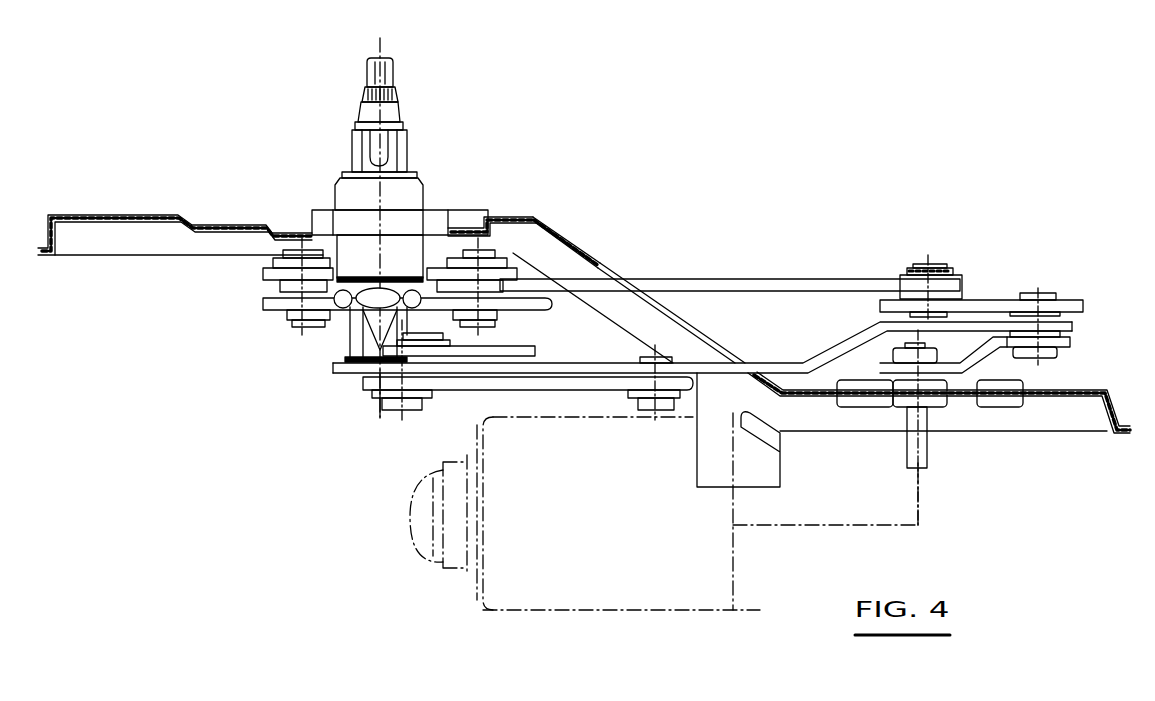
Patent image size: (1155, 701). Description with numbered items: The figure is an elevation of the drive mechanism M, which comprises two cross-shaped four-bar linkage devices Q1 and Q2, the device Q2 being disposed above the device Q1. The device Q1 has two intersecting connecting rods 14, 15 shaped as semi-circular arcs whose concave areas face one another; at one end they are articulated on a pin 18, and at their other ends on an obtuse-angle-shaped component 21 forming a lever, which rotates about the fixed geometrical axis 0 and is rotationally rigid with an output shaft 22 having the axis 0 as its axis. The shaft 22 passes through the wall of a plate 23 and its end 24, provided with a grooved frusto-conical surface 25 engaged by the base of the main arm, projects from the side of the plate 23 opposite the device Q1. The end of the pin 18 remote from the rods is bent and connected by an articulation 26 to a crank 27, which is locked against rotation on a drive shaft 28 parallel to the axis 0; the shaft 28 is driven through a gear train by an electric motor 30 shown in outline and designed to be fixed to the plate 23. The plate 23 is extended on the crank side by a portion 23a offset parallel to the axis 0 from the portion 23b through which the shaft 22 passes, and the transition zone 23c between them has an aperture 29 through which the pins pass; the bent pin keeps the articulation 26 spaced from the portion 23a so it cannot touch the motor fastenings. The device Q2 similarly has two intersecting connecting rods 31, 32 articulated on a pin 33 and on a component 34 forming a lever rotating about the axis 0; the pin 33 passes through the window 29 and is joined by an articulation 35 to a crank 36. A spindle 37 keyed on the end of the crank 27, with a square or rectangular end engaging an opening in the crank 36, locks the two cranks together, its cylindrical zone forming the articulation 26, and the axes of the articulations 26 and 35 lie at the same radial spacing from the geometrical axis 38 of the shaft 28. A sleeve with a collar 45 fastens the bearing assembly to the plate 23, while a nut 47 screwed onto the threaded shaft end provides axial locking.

The fixed geometrical axis 0 is at (378, 155).
The connecting rod 14 is at (565, 382).
The connecting rod 15 is at (516, 352).
The pin 18 is at (713, 366).
The component forming a lever 21 is at (368, 368).
The output shaft 22 is at (392, 110).
The plate 23 is at (517, 209).
The offset portion of plate 23a is at (1083, 398).
The portion of plate 23b is at (287, 220).
The transition zone 23c is at (554, 227).
The end of output shaft 24 is at (352, 78).
The grooved frusto-conical surface 25 is at (398, 93).
The articulation 26 is at (1058, 318).
The crank 27 is at (990, 358).
The drive shaft 28 is at (920, 445).
The aperture 29 is at (597, 258).
The electric motor 30 is at (620, 595).
The connecting rod 31 is at (265, 270).
The connecting rod 32 is at (272, 302).
The pin 33 is at (782, 281).
The component forming a lever 34 is at (316, 324).
The articulation 35 is at (917, 260).
The crank 36 is at (1000, 298).
The spindle 37 is at (1045, 352).
The geometrical axis of drive shaft 38 is at (917, 340).
The collar 45 is at (444, 214).
The nut 47 is at (363, 332).
The drive mechanism M is at (748, 196).
The cross-shaped four-bar linkage device Q1 is at (455, 403).
The cross-shaped four-bar linkage device Q2 is at (975, 282).